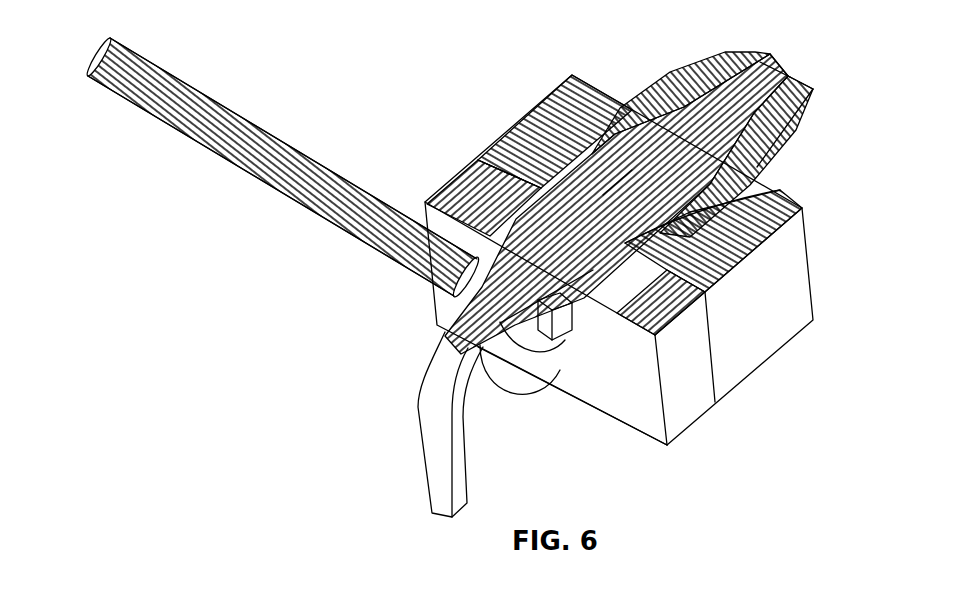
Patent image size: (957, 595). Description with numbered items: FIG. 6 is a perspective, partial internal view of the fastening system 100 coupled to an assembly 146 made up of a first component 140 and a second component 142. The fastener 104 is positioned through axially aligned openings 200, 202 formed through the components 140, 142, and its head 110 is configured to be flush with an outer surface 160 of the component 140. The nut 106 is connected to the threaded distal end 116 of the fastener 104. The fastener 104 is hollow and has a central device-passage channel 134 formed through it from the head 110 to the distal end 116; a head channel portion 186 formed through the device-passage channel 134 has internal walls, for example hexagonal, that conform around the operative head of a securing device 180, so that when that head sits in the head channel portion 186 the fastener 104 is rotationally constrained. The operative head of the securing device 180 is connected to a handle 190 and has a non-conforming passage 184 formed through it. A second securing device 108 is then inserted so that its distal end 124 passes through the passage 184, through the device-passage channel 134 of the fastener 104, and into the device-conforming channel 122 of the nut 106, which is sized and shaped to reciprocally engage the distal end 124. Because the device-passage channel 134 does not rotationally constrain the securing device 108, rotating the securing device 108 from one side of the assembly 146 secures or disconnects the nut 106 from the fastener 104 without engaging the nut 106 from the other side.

The fastening system 100 is at (383, 434).
The fastener 104 is at (637, 147).
The nut 106 is at (800, 107).
The securing device 108 is at (457, 468).
The head 110 is at (543, 362).
The distal end 116 is at (702, 88).
The device-conforming channel 122 is at (757, 63).
The distal end 124 is at (782, 68).
The device-passage channel 134 is at (603, 195).
The first component 140 is at (683, 415).
The second component 142 is at (760, 345).
The assembly 146 is at (567, 67).
The outer surface 160 is at (617, 418).
The securing device 180 is at (338, 224).
The passage 184 is at (515, 340).
The head channel portion 186 is at (700, 212).
The handle 190 is at (256, 177).
The opening 200 is at (485, 158).
The opening 202 is at (747, 172).